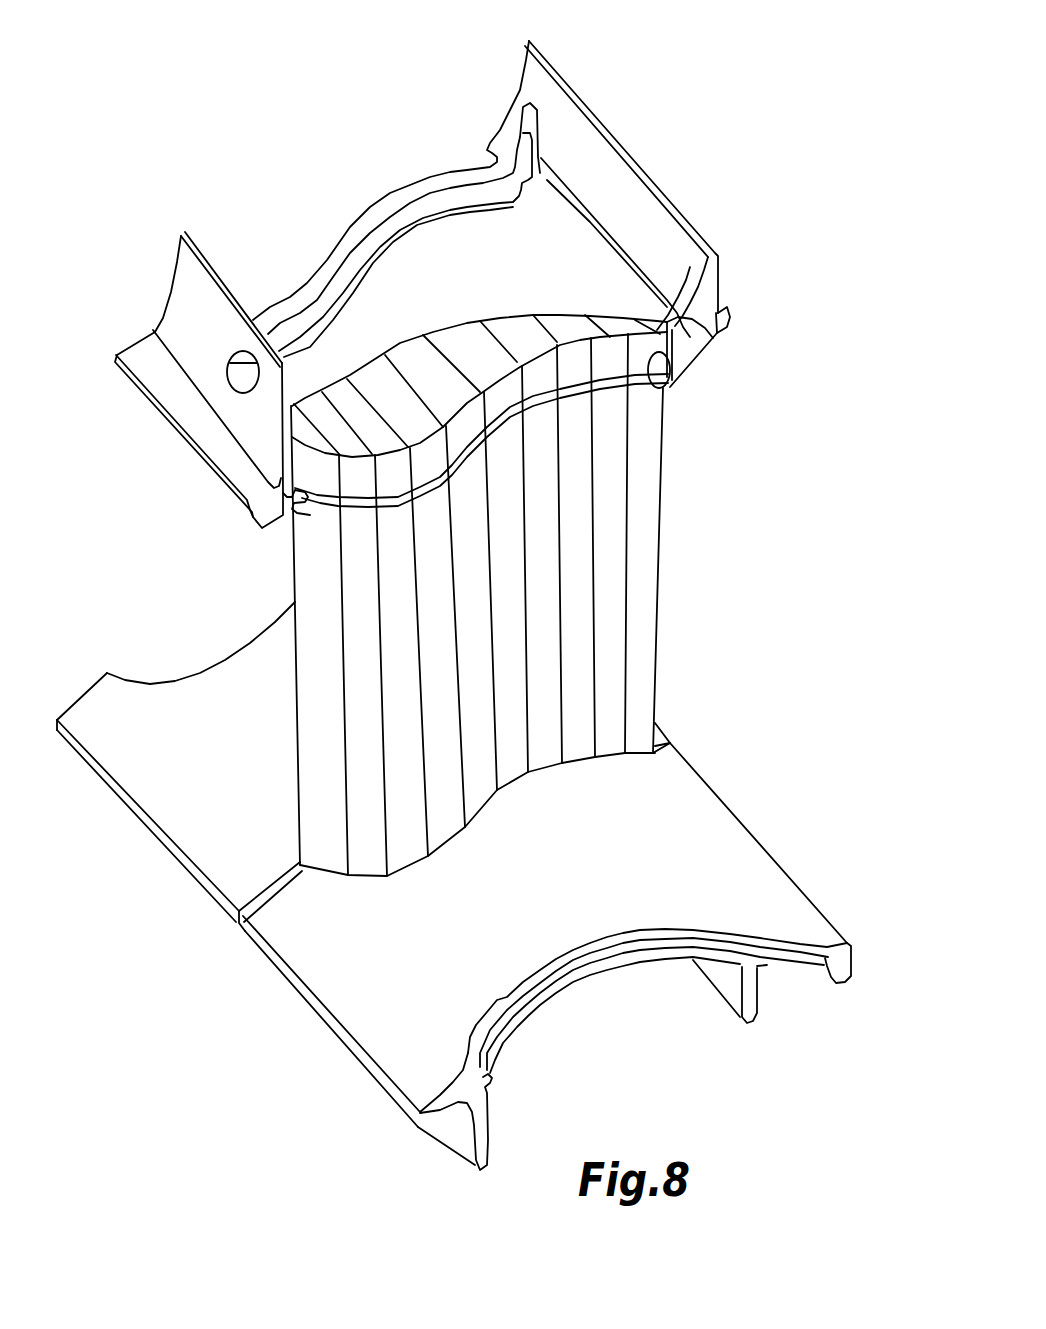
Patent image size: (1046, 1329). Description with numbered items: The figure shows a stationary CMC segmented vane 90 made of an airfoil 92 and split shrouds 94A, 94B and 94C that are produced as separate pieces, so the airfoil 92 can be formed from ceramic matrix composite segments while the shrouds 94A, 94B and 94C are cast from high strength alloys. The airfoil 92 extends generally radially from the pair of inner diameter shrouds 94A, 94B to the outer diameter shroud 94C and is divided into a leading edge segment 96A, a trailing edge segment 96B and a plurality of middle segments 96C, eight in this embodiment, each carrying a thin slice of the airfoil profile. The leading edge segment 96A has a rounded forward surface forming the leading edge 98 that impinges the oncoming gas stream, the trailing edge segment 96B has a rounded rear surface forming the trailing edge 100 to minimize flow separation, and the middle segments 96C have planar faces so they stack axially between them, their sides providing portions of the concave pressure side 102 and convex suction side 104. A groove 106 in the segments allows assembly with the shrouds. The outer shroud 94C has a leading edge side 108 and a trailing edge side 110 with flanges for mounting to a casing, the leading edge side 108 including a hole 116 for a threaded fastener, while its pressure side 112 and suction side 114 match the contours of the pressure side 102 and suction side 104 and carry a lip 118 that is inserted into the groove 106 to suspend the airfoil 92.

The stationary CMC segmented vane 90 is at (684, 107).
The airfoil 92 is at (675, 467).
The inner diameter shroud 94A is at (153, 839).
The inner diameter shroud 94B is at (329, 1049).
The outer diameter shroud 94C is at (577, 91).
The leading edge segment 96A is at (318, 622).
The trailing edge segment 96B is at (640, 672).
The middle segments 96C is at (555, 293).
The leading edge 98 is at (332, 445).
The trailing edge 100 is at (712, 330).
The concave pressure side 102 is at (527, 362).
The convex suction side 104 is at (457, 322).
The groove 106 is at (360, 510).
The leading edge side 108 is at (143, 353).
The trailing edge side 110 is at (718, 286).
The pressure side 112 is at (670, 387).
The suction side 114 is at (308, 285).
The hole 116 is at (237, 380).
The lip 118 is at (302, 473).